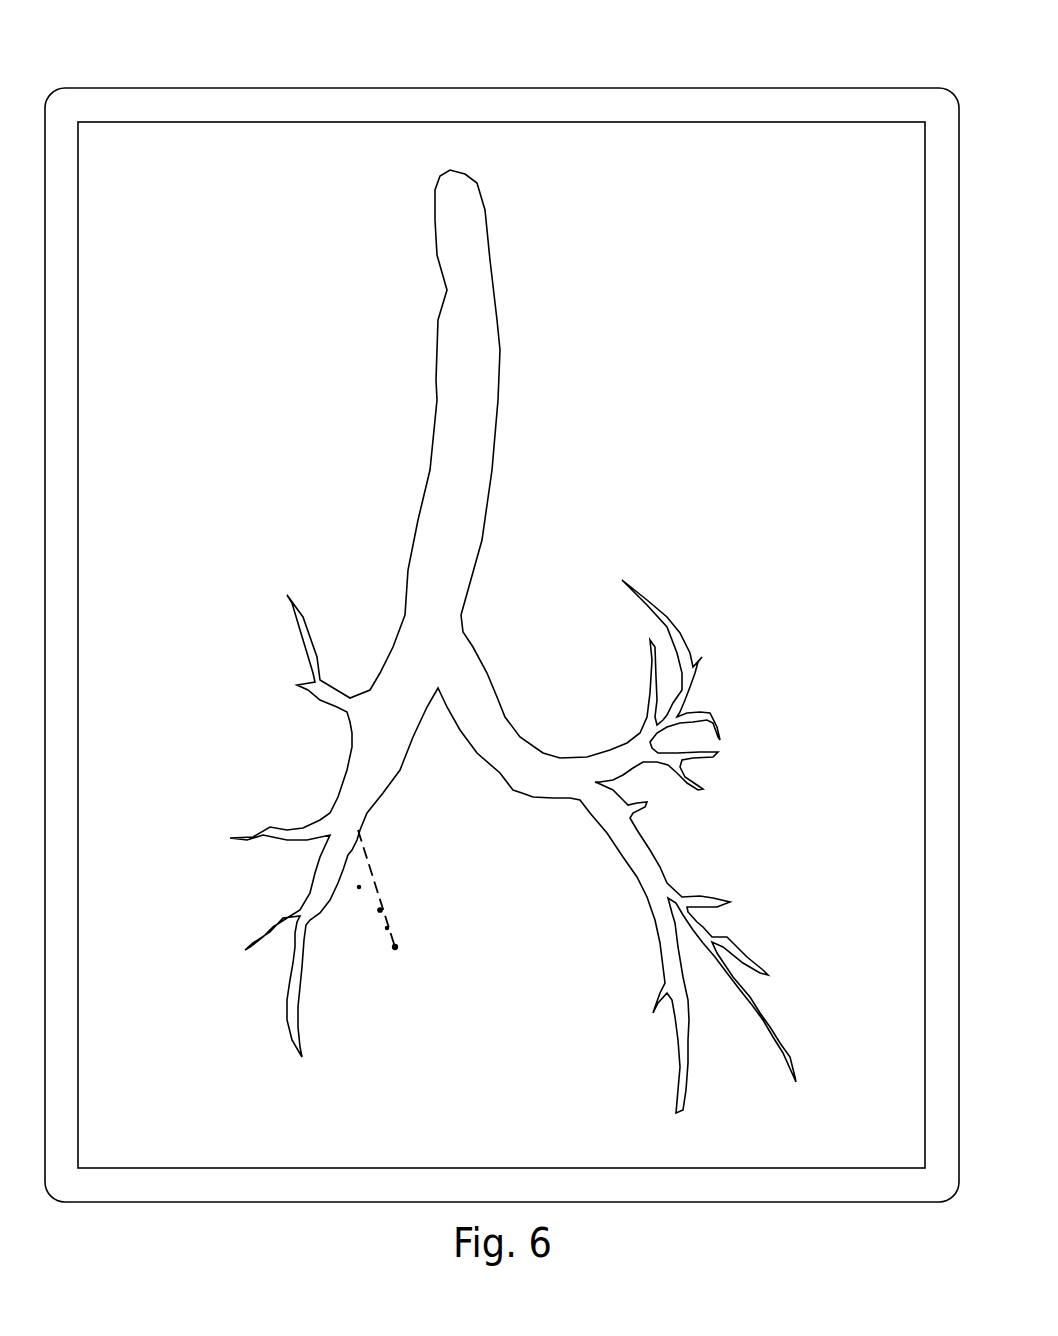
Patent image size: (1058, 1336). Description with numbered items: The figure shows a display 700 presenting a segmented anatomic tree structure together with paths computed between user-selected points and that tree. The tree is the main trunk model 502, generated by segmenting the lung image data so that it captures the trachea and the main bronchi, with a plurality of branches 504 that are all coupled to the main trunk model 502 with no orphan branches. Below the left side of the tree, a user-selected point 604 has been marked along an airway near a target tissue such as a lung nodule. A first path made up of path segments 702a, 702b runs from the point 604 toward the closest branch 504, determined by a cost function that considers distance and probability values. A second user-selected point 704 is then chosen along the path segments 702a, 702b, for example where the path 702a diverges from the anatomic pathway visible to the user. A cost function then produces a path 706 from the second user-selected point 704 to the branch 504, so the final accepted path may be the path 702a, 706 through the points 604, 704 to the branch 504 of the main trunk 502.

The display 700 is at (635, 63).
The main trunk model 502 is at (409, 418).
The branches 504 is at (360, 723).
The path 706 is at (367, 856).
The second user-selected point 704 is at (382, 912).
The path segment 702a is at (388, 929).
The path segment 702b is at (359, 887).
The user-selected point 604 is at (398, 948).